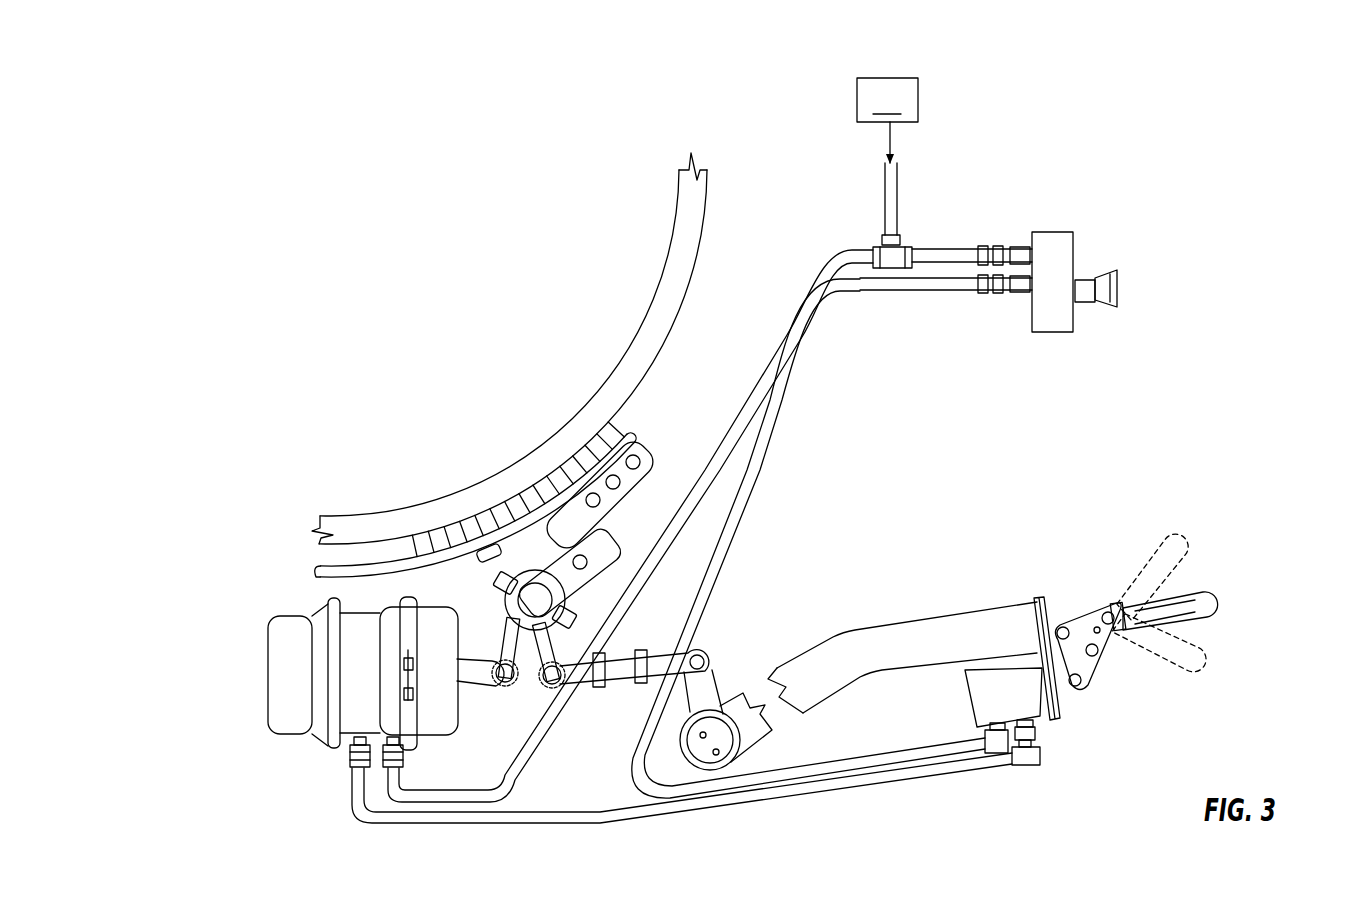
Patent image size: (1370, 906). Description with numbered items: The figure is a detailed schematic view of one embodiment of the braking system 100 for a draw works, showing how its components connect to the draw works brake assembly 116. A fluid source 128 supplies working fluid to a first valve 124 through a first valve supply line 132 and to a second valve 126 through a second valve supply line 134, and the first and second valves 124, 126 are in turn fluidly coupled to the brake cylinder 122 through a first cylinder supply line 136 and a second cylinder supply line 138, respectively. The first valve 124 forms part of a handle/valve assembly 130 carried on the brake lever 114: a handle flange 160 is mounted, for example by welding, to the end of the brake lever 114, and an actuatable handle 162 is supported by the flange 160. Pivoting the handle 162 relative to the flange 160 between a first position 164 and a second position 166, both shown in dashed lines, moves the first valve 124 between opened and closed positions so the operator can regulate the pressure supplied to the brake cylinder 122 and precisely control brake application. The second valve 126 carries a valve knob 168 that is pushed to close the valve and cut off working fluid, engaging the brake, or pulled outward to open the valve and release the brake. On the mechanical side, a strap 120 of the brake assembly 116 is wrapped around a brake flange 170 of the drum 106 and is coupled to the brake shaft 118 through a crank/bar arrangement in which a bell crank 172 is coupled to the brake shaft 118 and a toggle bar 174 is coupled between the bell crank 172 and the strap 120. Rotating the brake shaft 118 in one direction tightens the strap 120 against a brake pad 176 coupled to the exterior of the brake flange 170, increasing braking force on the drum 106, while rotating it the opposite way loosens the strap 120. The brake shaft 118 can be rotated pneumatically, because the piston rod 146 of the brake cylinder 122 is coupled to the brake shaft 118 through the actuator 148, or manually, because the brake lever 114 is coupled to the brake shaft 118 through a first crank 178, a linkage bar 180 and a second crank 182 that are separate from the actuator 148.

The braking system 100 is at (310, 188).
The drum 106 is at (509, 328).
The brake lever 114 is at (903, 637).
The brake assembly 116 is at (322, 492).
The brake shaft 118 is at (530, 598).
The strap 120 is at (327, 591).
The brake cylinder 122 is at (265, 728).
The first valve 124 is at (1045, 713).
The second valve 126 is at (1045, 332).
The fluid source 128 is at (887, 120).
The handle/valve assembly 130 is at (1238, 545).
The first valve supply line 132 is at (772, 432).
The second valve supply line 134 is at (930, 255).
The first cylinder supply line 136 is at (855, 791).
The second cylinder supply line 138 is at (870, 292).
The piston rod 146 is at (465, 675).
The actuator 148 is at (520, 575).
The handle flange 160 is at (1037, 600).
The handle 162 is at (1215, 602).
The first position 164 is at (1162, 530).
The second position 166 is at (1182, 672).
The valve knob 168 is at (1120, 282).
The brake flange 170 is at (676, 283).
The bell crank 172 is at (590, 578).
The toggle bar 174 is at (610, 512).
The brake pad 176 is at (576, 468).
The first crank 178 is at (713, 690).
The linkage bar 180 is at (625, 670).
The second crank 182 is at (550, 646).